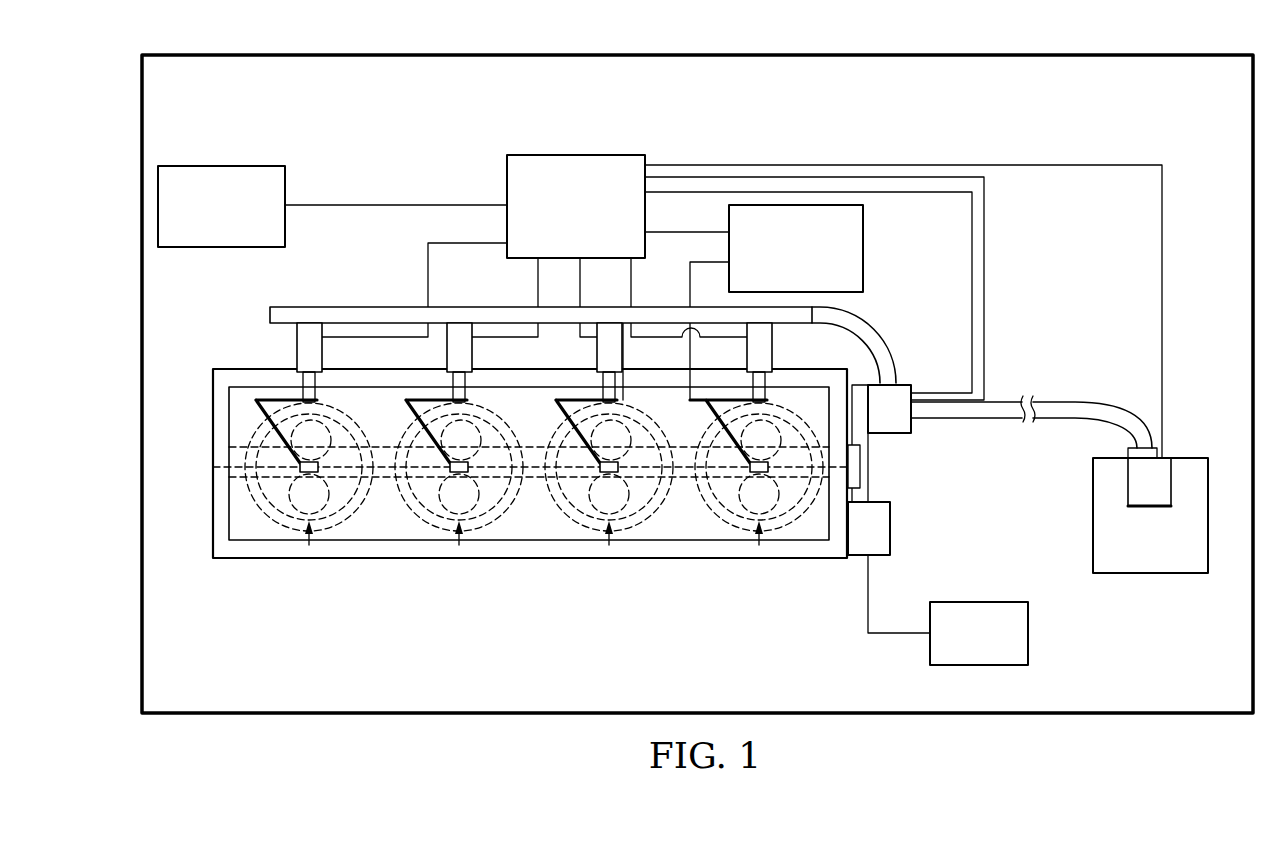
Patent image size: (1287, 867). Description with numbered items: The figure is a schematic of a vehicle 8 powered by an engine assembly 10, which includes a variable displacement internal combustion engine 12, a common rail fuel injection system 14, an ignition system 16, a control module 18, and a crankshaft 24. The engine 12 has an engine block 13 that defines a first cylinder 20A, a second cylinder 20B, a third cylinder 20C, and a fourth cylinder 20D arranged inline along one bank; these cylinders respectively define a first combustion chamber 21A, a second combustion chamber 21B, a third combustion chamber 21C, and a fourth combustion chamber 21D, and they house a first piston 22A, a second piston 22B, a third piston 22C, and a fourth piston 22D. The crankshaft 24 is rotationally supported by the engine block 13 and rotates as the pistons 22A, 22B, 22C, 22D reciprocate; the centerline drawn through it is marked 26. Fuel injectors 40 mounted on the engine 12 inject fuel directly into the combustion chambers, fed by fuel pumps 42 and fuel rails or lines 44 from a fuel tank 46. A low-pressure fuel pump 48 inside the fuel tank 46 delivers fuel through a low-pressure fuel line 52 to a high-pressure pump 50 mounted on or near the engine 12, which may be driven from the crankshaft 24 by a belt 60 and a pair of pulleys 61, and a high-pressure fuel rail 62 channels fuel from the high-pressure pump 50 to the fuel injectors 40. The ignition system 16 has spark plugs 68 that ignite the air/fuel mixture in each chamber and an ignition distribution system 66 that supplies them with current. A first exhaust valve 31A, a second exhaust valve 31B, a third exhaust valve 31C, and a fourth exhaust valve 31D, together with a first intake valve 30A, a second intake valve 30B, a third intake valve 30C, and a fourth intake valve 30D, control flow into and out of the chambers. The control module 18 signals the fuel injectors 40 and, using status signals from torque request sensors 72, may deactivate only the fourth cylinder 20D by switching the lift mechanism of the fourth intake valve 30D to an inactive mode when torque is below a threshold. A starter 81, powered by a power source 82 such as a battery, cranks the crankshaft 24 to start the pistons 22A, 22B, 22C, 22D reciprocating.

The vehicle 8 is at (891, 45).
The engine assembly 10 is at (983, 108).
The variable displacement internal combustion engine 12 is at (320, 560).
The engine block 13 is at (468, 560).
The common rail fuel injection system 14 is at (1010, 340).
The ignition system 16 is at (890, 234).
The control module 18 is at (580, 155).
The first cylinder 20A is at (708, 508).
The second cylinder 20B is at (560, 510).
The third cylinder 20C is at (410, 510).
The fourth cylinder 20D is at (260, 510).
The first combustion chamber 21A is at (759, 545).
The second combustion chamber 21B is at (609, 545).
The third combustion chamber 21C is at (459, 545).
The fourth combustion chamber 21D is at (309, 545).
The first piston 22A is at (732, 513).
The second piston 22B is at (582, 513).
The third piston 22C is at (432, 513).
The fourth piston 22D is at (281, 513).
The crankshaft 24 is at (223, 482).
The crankshaft axis 26 is at (240, 437).
The first intake valve 30A is at (786, 541).
The second intake valve 30B is at (648, 514).
The third intake valve 30C is at (496, 514).
The fourth intake valve 30D is at (348, 514).
The first exhaust valve 31A is at (802, 394).
The second exhaust valve 31B is at (650, 420).
The third exhaust valve 31C is at (500, 420).
The fourth exhaust valve 31D is at (350, 420).
The fuel injectors 40 is at (297, 331).
The fuel pumps 42 is at (912, 427).
The fuel rails or lines 44 is at (880, 338).
The fuel tank 46 is at (1185, 458).
The low-pressure fuel pump 48 is at (1128, 482).
The high-pressure pump 50 is at (912, 390).
The low-pressure fuel line 52 is at (1006, 420).
The belt 60 is at (864, 518).
The pulleys 61 is at (873, 460).
The high-pressure fuel rail 62 is at (460, 307).
The ignition distribution system 66 is at (793, 205).
The spark plugs 68 is at (303, 460).
The torque request sensors 72 is at (222, 165).
The starter 81 is at (892, 530).
The power source 82 is at (983, 602).